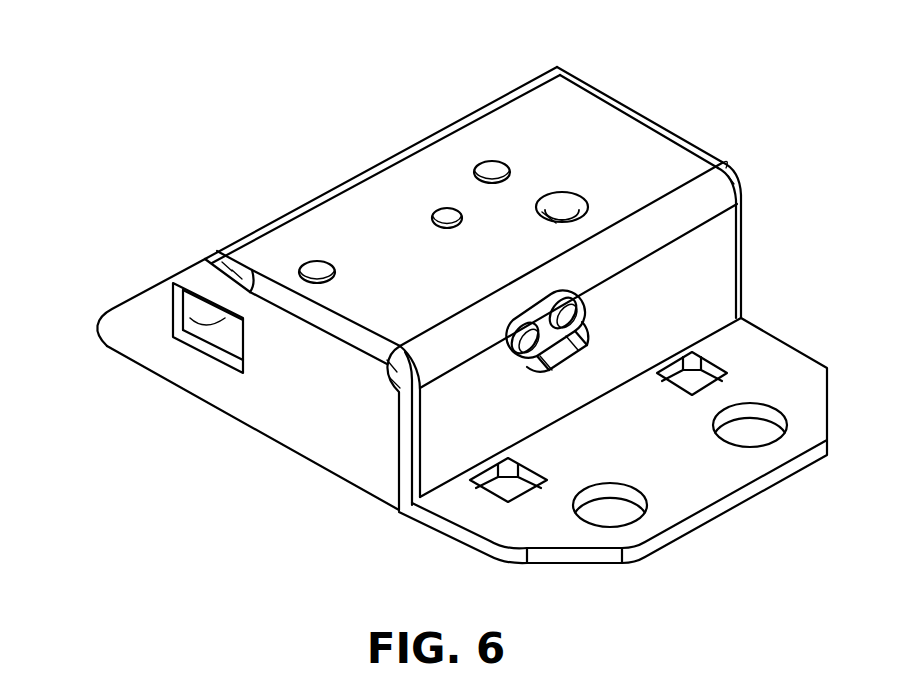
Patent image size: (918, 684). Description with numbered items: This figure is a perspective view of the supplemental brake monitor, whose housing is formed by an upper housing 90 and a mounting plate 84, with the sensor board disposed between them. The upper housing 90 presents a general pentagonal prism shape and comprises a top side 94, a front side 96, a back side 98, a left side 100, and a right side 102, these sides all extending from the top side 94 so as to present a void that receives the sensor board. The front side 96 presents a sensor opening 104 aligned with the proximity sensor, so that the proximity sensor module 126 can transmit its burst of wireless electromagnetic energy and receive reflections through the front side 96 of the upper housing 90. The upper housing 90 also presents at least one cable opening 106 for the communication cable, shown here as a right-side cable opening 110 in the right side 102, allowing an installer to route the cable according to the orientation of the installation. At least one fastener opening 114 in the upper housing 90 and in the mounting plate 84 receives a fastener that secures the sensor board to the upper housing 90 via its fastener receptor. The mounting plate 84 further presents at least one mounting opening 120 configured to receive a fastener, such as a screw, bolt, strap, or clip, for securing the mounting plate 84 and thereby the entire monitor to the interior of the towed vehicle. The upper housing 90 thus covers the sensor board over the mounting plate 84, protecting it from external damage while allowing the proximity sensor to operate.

The mounting plate 84 is at (795, 377).
The upper housing 90 is at (569, 65).
The top side 94 is at (607, 125).
The front side 96 is at (707, 267).
The back side 98 is at (281, 168).
The left side 100 is at (757, 187).
The right side 102 is at (315, 443).
The sensor opening 104 is at (595, 311).
The cable opening 106 is at (149, 317).
The right-side cable opening 110 is at (203, 347).
The fastener opening 114 is at (475, 172).
The mounting opening 120 is at (624, 509).
The proximity sensor module 126 is at (541, 304).